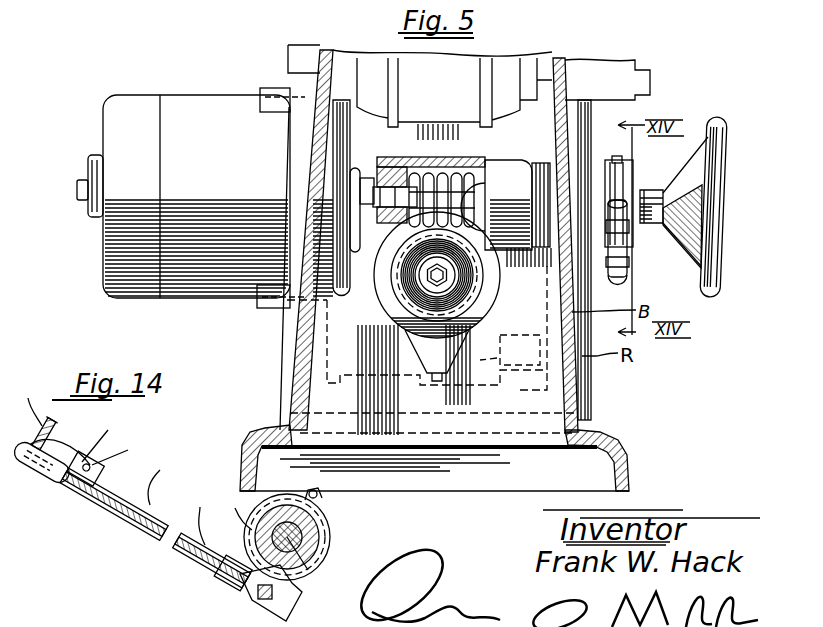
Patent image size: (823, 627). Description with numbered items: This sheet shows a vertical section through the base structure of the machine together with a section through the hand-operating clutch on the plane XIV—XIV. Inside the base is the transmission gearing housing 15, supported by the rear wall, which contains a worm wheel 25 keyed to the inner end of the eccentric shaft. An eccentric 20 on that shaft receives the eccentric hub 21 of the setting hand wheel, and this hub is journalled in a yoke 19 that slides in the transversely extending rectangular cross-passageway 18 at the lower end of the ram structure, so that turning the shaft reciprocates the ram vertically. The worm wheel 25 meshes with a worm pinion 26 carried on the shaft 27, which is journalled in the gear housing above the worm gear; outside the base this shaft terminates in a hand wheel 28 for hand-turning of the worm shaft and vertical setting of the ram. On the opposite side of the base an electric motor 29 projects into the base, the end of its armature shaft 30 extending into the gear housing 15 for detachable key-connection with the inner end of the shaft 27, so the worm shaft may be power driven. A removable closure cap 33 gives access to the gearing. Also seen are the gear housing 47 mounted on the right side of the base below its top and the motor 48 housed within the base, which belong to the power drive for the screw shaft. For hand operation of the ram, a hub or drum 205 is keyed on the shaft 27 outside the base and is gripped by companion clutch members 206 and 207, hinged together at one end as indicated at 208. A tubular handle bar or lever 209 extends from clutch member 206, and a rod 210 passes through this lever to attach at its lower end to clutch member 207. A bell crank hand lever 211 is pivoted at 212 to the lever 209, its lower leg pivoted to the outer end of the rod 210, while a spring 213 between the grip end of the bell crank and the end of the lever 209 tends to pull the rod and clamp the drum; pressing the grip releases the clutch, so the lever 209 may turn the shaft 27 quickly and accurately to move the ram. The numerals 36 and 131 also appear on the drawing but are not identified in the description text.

In FIG. 5, the electric motor 29 is at (225, 76).
In FIG. 5, the motor 48 is at (470, 76).
In FIG. 5, the gear housing 47 is at (597, 78).
In FIG. 5, the armature shaft 30 is at (392, 165).
In FIG. 5, the worm pinion 26 is at (455, 173).
In FIG. 5, the transmission gearing housing 15 is at (503, 168).
In FIG. 5, the shaft 27 is at (479, 203).
In FIG. 14, the shaft 27 is at (308, 570).
In FIG. 5, the worm wheel 25 is at (380, 292).
In FIG. 5, the eccentric hub 21 is at (495, 292).
In FIG. 5, the eccentric 20 is at (497, 312).
In FIG. 5, the removable closure cap 33 is at (400, 334).
In FIG. 5, the yoke 19 is at (500, 345).
In FIG. 5, the cross-passageway 18 is at (528, 390).
In FIG. 5, the hand wheel 28 is at (720, 165).
In FIG. 5, the hub or drum 205 is at (640, 170).
In FIG. 14, the hub or drum 205 is at (312, 532).
In FIG. 5, the clutch member 206 is at (624, 190).
In FIG. 14, the clutch member 206 is at (272, 557).
In FIG. 5, the clutch member 207 is at (625, 282).
In FIG. 14, the clutch member 207 is at (305, 550).
In FIG. 5, the hinge 208 is at (618, 155).
In FIG. 14, the hinge 208 is at (320, 498).
In FIG. 5, the tubular handle bar or lever 209 is at (630, 226).
In FIG. 14, the tubular handle bar or lever 209 is at (169, 503).
In FIG. 5, the rod 210 is at (644, 182).
In FIG. 14, the rod 210 is at (236, 537).
In FIG. 14, the bell crank hand lever 211 is at (69, 441).
In FIG. 14, the pivot 212 is at (122, 450).
In FIG. 14, the spring 213 is at (29, 424).
In FIG. 5, the frame 36 is at (140, 2).
In FIG. 5, the support 131 is at (284, 2).